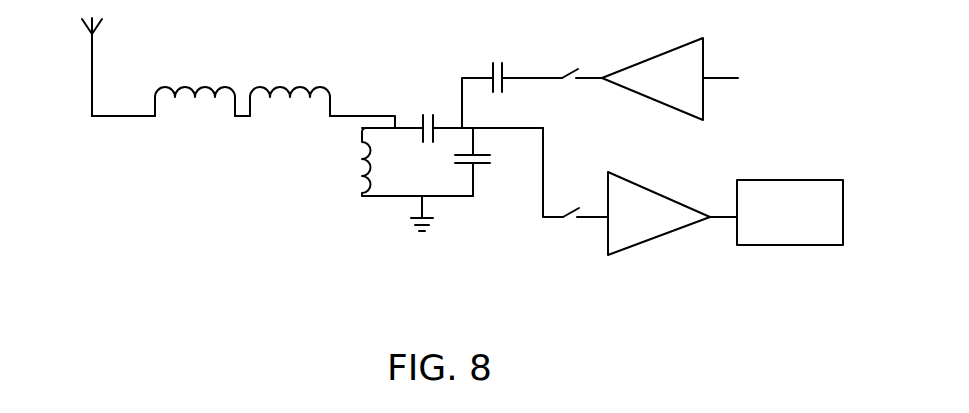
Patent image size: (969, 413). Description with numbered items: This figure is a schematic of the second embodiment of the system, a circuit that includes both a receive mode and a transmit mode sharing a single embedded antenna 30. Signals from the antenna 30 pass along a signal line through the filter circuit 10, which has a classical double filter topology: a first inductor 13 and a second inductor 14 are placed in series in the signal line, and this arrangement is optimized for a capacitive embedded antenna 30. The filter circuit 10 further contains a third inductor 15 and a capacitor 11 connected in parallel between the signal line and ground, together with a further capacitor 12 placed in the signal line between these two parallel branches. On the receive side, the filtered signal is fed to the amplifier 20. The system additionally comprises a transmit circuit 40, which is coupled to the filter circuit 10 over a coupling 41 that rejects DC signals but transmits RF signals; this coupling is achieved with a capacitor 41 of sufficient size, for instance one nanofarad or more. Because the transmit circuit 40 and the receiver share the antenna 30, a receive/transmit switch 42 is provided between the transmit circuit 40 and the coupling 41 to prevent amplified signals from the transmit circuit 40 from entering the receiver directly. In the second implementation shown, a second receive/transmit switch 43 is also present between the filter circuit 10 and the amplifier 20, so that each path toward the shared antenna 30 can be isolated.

The filter circuit 10 is at (391, 226).
The capacitor 11 is at (487, 166).
The further capacitor 12 is at (423, 118).
The first inductor 13 is at (204, 86).
The second inductor 14 is at (306, 86).
The third inductor 15 is at (360, 190).
The amplifier 20 is at (656, 230).
The embedded antenna 30 is at (92, 78).
The transmit circuit 40 is at (706, 50).
The coupling capacitor 41 is at (493, 62).
The receive/transmit switch 42 is at (567, 70).
The second receive/transmit switch 43 is at (568, 220).